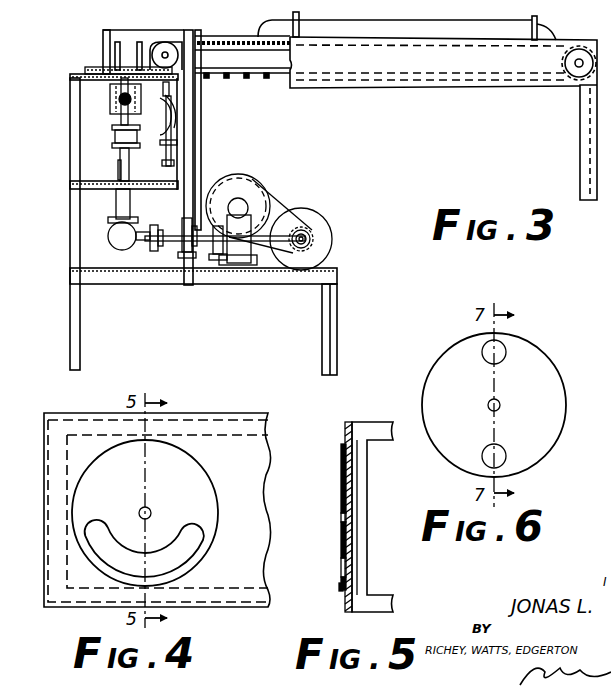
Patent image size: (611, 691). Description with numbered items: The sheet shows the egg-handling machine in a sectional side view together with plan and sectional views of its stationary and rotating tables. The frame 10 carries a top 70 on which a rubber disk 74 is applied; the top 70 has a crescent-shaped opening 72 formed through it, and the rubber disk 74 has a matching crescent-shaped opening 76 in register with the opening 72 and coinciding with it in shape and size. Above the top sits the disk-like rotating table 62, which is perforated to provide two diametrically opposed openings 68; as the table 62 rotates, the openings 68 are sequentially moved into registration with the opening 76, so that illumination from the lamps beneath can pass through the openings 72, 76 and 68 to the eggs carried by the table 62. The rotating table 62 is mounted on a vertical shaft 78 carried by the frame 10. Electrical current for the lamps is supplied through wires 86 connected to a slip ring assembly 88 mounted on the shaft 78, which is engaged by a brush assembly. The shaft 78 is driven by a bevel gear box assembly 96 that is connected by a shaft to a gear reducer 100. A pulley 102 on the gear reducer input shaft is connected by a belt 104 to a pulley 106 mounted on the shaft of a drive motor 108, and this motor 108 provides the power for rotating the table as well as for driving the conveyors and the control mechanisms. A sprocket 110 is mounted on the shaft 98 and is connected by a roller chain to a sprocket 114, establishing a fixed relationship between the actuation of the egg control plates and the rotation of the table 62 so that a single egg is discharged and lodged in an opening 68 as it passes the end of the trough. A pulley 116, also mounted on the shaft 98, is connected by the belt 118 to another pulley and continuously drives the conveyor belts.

In FIG. 5, the frame 10 is at (362, 430).
In FIG. 3, the rotating table 62 is at (88, 67).
In FIG. 6, the rotating table 62 is at (548, 368).
In FIG. 6, the openings 68 is at (503, 352).
In FIG. 4, the top 70 is at (262, 470).
In FIG. 5, the top 70 is at (349, 436).
In FIG. 4, the crescent-shaped opening 72 is at (200, 535).
In FIG. 5, the crescent-shaped opening 72 is at (352, 570).
In FIG. 4, the rubber disk 74 is at (192, 478).
In FIG. 5, the rubber disk 74 is at (343, 478).
In FIG. 4, the crescent-shaped opening 76 is at (178, 534).
In FIG. 5, the crescent-shaped opening 76 is at (343, 590).
In FIG. 3, the vertical shaft 78 is at (118, 126).
In FIG. 3, the wires 86 is at (166, 125).
In FIG. 3, the slip ring assembly 88 is at (112, 136).
In FIG. 3, the bevel gear box assembly 96 is at (108, 232).
In FIG. 3, the shaft 98 is at (203, 254).
In FIG. 3, the gear reducer 100 is at (246, 222).
In FIG. 3, the pulley 102 is at (253, 187).
In FIG. 3, the belt 104 is at (278, 200).
In FIG. 3, the pulley 106 is at (313, 244).
In FIG. 3, the drive motor 108 is at (318, 222).
In FIG. 3, the sprocket 110 is at (157, 251).
In FIG. 3, the sprocket 114 is at (172, 167).
In FIG. 3, the pulley 116 is at (187, 258).
In FIG. 3, the belt 118 is at (193, 192).